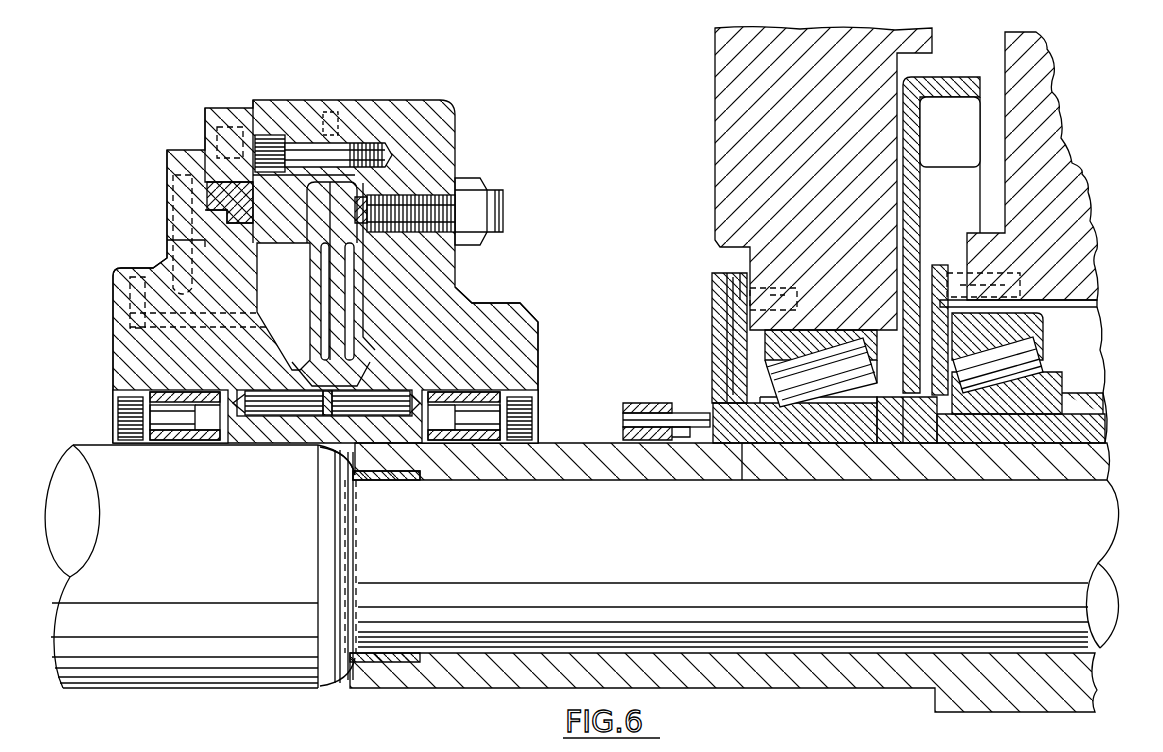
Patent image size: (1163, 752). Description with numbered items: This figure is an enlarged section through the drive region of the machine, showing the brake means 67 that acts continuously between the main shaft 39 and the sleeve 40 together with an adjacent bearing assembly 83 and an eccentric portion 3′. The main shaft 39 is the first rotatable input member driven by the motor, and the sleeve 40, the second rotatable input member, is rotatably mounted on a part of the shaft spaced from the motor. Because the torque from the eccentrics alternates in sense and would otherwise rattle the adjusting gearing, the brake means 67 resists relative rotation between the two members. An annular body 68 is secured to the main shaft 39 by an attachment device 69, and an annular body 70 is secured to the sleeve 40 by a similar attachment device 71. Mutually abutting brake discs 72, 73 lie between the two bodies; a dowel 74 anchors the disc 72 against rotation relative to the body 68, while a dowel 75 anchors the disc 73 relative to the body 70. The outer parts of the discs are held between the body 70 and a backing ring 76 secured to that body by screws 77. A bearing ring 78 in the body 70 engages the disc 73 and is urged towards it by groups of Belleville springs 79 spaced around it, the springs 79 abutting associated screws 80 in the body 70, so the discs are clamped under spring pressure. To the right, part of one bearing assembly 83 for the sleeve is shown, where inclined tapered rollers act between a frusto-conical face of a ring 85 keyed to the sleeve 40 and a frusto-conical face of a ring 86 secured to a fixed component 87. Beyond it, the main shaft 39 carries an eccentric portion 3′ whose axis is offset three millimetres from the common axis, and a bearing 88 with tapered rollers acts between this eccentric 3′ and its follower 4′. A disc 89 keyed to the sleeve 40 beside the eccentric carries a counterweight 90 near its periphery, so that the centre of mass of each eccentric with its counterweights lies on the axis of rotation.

The main shaft 39 is at (242, 645).
The sleeve 40 is at (450, 662).
The brake means 67 is at (489, 99).
The annular body 68 is at (152, 357).
The attachment device 69 is at (133, 412).
The annular body 70 is at (507, 338).
The attachment device 71 is at (540, 408).
The brake disc 72 is at (320, 210).
The brake disc 73 is at (340, 230).
The dowel 74 is at (263, 398).
The dowel 75 is at (382, 448).
The backing ring 76 is at (277, 120).
The screws 77 is at (310, 153).
The bearing ring 78 is at (368, 290).
The Belleville springs 79 is at (385, 225).
The screws 80 is at (427, 205).
The bearing assembly 83 is at (702, 124).
The ring 85 is at (860, 440).
The ring 86 is at (802, 347).
The fixed component 87 is at (760, 188).
The bearing 88 is at (1069, 360).
The disc 89 is at (913, 213).
The counterweight 90 is at (958, 120).
The follower 4′ is at (1037, 108).
The eccentric portion 3′ is at (988, 430).